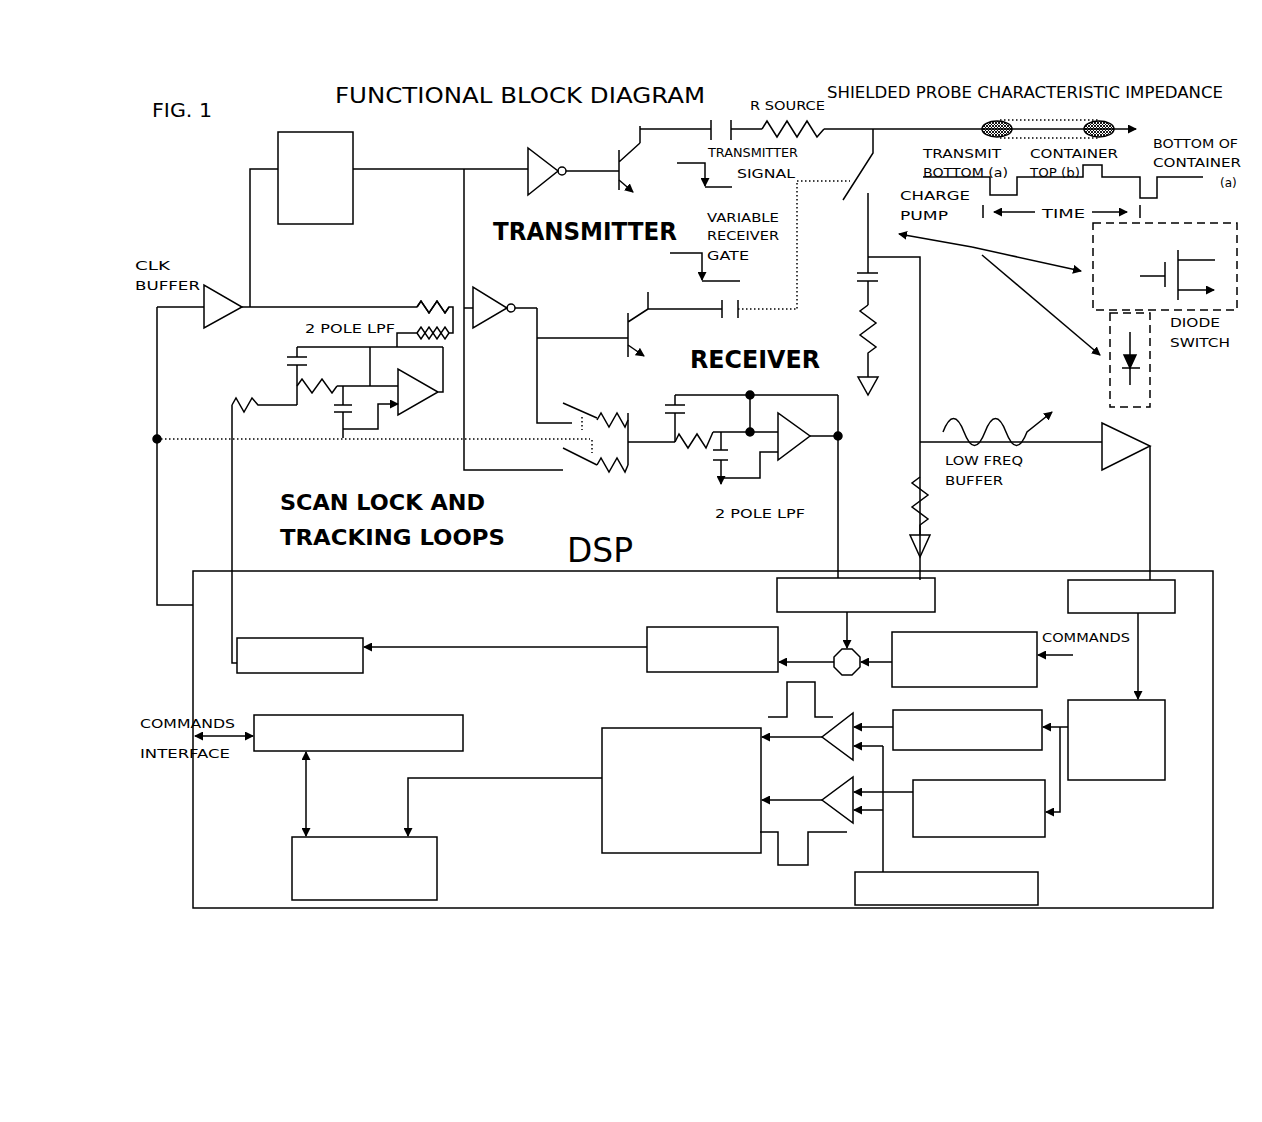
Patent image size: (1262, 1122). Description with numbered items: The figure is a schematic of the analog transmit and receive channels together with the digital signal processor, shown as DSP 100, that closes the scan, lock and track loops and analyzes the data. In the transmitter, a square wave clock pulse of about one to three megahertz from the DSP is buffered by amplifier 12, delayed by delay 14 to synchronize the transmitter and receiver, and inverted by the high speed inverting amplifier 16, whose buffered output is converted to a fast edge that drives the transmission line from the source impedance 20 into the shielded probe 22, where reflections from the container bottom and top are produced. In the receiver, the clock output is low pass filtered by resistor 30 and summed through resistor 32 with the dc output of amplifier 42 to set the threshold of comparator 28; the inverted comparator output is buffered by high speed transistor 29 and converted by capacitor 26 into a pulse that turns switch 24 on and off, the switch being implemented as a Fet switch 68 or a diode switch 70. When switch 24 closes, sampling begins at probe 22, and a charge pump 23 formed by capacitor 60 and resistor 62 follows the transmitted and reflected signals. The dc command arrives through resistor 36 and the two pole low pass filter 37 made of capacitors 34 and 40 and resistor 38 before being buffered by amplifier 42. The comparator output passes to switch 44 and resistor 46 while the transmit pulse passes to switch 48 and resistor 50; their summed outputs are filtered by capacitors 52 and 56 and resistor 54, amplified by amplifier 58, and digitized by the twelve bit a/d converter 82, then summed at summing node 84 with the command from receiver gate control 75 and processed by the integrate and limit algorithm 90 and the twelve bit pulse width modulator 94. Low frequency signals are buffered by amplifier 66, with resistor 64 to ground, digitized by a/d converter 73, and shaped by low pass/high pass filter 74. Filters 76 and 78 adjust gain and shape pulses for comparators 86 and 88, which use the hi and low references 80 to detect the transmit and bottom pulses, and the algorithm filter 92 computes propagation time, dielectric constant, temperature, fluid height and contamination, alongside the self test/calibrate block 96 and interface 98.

The amplifier 12 is at (226, 300).
The delay 14 is at (297, 135).
The inverting amplifier 16 is at (538, 160).
The source resistor 20 is at (832, 121).
The probe 22 is at (985, 121).
The charge pump 23 is at (975, 246).
The switch 24 is at (874, 178).
The capacitor 26 is at (739, 319).
The comparator 28 is at (490, 296).
The high speed transistor 29 is at (633, 303).
The resistor 30 is at (425, 296).
The resistor 32 is at (407, 321).
The capacitor 34 is at (286, 344).
The resistor 36 is at (232, 398).
The 2 pole low pass filter 37 is at (330, 307).
The resistor 38 is at (313, 398).
The capacitor 40 is at (333, 424).
The amplifier 42 is at (418, 410).
The switch 44 is at (574, 399).
The resistor 46 is at (612, 409).
The switch 48 is at (580, 472).
The resistor 50 is at (625, 472).
The capacitor 52 is at (663, 407).
The resistor 54 is at (689, 455).
The capacitor 56 is at (715, 478).
The amplifier 58 is at (801, 432).
The capacitor 60 is at (853, 266).
The resistor 62 is at (876, 331).
The resistor 64 is at (908, 505).
The amplifier 66 is at (1135, 438).
The Fet switch 68 is at (1195, 228).
The diode switch 70 is at (1145, 393).
The 12 bit a/d converter 73 is at (1148, 610).
The low pass/high pass filter 74 is at (1162, 718).
The receiver gate control 75 is at (995, 636).
The filter 76 is at (1000, 746).
The filter 78 is at (1035, 842).
The hi and low references 80 is at (1033, 891).
The 12 bit a/d converter 82 is at (777, 596).
The summing 84 is at (838, 651).
The comparator 86 is at (840, 718).
The comparator 88 is at (845, 790).
The integrate and limit algorithm 90 is at (665, 630).
The algorithm filter 92 is at (660, 735).
The 12 bit pulse width modulator 94 is at (340, 648).
The self test/calibrate 96 is at (390, 720).
The interface 98 is at (437, 867).
The DSP 100 is at (200, 670).